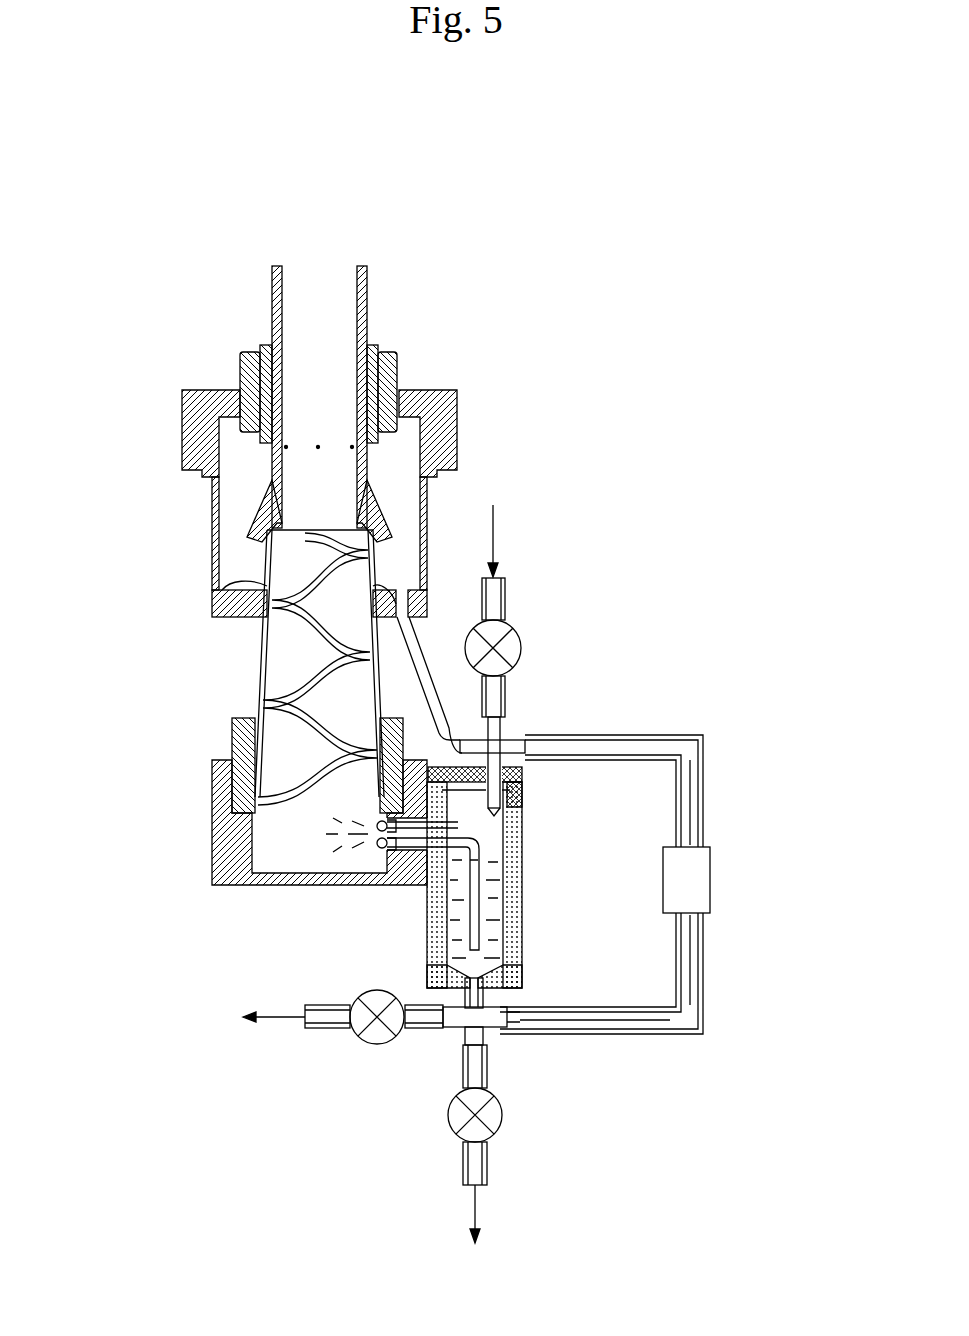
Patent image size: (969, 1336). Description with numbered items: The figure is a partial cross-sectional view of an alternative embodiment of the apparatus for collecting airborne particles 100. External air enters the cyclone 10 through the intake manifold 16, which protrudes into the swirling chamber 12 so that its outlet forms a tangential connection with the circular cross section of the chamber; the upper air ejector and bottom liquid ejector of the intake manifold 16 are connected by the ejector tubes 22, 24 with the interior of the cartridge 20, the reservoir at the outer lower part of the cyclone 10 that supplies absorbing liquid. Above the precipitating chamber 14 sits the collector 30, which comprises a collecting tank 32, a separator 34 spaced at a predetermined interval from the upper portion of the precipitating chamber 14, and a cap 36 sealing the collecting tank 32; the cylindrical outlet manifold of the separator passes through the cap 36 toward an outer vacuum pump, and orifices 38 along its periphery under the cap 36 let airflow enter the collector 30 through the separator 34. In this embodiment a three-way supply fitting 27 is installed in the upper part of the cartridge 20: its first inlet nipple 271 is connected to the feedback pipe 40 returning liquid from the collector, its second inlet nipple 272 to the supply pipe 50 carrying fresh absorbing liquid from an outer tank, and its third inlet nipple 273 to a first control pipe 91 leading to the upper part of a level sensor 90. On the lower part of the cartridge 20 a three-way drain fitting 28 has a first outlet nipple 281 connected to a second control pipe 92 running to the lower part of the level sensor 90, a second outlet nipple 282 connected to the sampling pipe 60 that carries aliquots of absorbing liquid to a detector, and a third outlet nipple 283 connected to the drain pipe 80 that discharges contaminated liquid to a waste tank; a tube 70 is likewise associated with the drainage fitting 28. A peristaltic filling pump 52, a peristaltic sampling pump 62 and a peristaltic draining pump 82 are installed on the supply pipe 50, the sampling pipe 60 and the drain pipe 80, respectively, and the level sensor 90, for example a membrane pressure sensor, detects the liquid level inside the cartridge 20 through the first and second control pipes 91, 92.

The collecting apparatus for airborne particles 100 is at (124, 311).
The cyclone 10 is at (102, 780).
The swirling chamber 12 is at (212, 862).
The precipitating chamber 14 is at (230, 784).
The intake manifold 16 is at (370, 865).
The cartridge 20 is at (523, 880).
The ejector tube 22 is at (505, 827).
The ejector tube 24 is at (480, 928).
The 3-way supply fitting 27 is at (510, 723).
The first inlet nipple 271 is at (513, 642).
The second inlet nipple 272 is at (503, 720).
The third inlet nipple 273 is at (520, 733).
The 3-way drain fitting 28 is at (490, 1006).
The first outlet nipple 281 is at (493, 1033).
The second outlet nipple 282 is at (463, 1038).
The third outlet nipple 283 is at (440, 1005).
The collector 30 is at (593, 297).
The collecting tank 32 is at (428, 520).
The separator 34 is at (382, 497).
The cap 36 is at (440, 418).
The orifices 38 is at (318, 447).
The feedback pipe 40 is at (420, 667).
The supply pipe 50 is at (482, 712).
The peristaltic filling pump 52 is at (507, 600).
The sampling pipe 60 is at (502, 1118).
The peristaltic sampling pump 62 is at (458, 1122).
The tube 70 is at (583, 1033).
The drain pipe 80 is at (422, 1028).
The peristaltic draining pump 82 is at (377, 1042).
The level sensor 90 is at (713, 880).
The first control pipe 91 is at (705, 795).
The second control pipe 92 is at (703, 965).